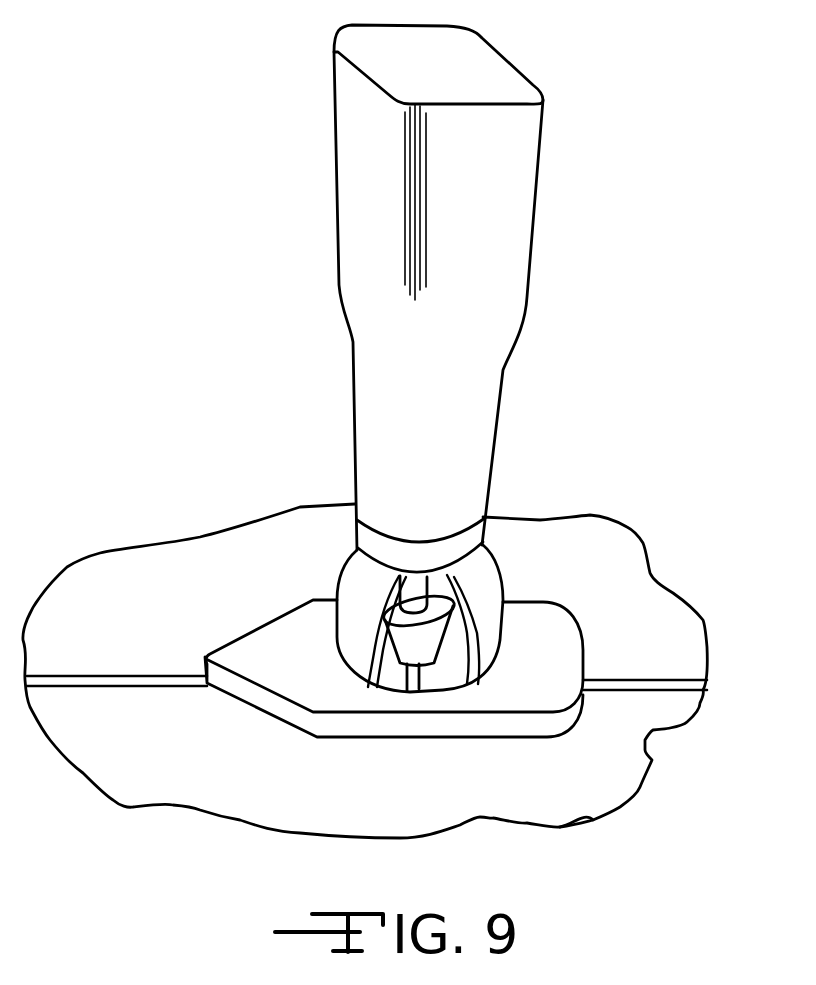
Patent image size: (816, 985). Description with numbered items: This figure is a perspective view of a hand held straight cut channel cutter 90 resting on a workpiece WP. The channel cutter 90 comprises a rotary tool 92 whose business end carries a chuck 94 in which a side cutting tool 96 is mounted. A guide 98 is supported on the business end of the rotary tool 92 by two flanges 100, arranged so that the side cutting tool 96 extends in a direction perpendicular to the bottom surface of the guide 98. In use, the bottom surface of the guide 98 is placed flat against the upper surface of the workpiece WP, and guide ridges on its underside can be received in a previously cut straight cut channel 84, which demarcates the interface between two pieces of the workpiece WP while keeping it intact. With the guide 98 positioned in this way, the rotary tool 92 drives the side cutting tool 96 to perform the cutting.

The straight cut channel 84 is at (110, 676).
The straight cut channel cutter 90 is at (502, 407).
The rotary tool 92 is at (537, 201).
The chuck 94 is at (443, 636).
The side cutting tool 96 is at (420, 677).
The guide 98 is at (252, 623).
The flanges 100 is at (502, 567).
The workpiece WP is at (652, 760).